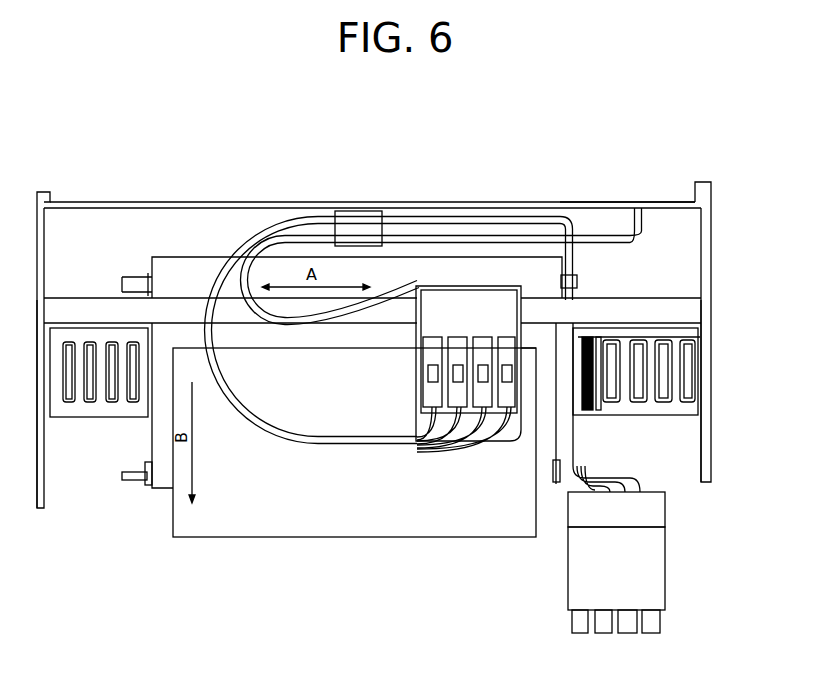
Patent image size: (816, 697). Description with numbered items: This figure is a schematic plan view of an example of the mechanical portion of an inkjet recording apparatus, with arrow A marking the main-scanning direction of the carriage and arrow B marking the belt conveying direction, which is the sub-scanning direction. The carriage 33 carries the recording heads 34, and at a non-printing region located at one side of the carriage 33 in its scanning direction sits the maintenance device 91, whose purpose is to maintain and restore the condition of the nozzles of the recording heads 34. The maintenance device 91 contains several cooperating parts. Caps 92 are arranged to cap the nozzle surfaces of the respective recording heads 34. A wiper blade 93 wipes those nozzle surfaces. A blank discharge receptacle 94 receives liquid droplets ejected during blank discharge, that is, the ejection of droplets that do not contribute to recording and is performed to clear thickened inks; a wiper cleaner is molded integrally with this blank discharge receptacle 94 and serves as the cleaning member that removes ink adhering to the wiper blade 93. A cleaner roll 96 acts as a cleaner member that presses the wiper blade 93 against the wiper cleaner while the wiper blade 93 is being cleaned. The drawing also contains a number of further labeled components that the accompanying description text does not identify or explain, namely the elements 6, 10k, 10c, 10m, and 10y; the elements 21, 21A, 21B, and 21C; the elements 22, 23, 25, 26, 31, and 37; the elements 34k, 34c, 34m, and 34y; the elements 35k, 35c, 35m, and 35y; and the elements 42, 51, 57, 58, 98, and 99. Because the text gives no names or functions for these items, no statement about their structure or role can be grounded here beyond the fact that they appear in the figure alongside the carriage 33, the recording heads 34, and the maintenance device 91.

The ink supply unit 6 is at (657, 560).
The black ink cartridge 10k is at (578, 633).
The cyan ink cartridge 10c is at (603, 633).
The magenta ink cartridge 10m is at (627, 633).
The yellow ink cartridge 10y is at (651, 633).
The frame 21 is at (712, 182).
The left frame member 21A is at (37, 250).
The right frame member 21B is at (711, 228).
The upper frame member 21C is at (615, 202).
The ink supply tube 22 is at (302, 222).
The tube connector 23 is at (657, 513).
The tube clamp 25 is at (352, 211).
The connector holder 26 is at (447, 443).
The guide rail 31 is at (188, 312).
The carriage 33 is at (515, 290).
The recording heads 34 is at (441, 266).
The black ink tube 34k is at (430, 335).
The cyan ink tube 34c is at (455, 335).
The magenta ink tube 34m is at (480, 335).
The yellow ink tube 34y is at (503, 335).
The black ink tube 35k is at (432, 438).
The cyan ink tube 35c is at (460, 445).
The magenta ink tube 35m is at (480, 445).
The yellow ink tube 35y is at (507, 445).
The tube cover 37 is at (253, 237).
The carriage 42 is at (297, 517).
The guide member 51 is at (207, 272).
The tube clamp 57 is at (570, 275).
The engaging portion 58 is at (150, 490).
The maintenance device 91 is at (702, 380).
The caps 92 is at (687, 403).
The wiper blade 93 is at (600, 347).
The blank discharge receptacle 94 is at (604, 352).
The cleaner roll 96 is at (590, 333).
The tank holder 98 is at (84, 328).
The ink tanks 99 is at (132, 403).